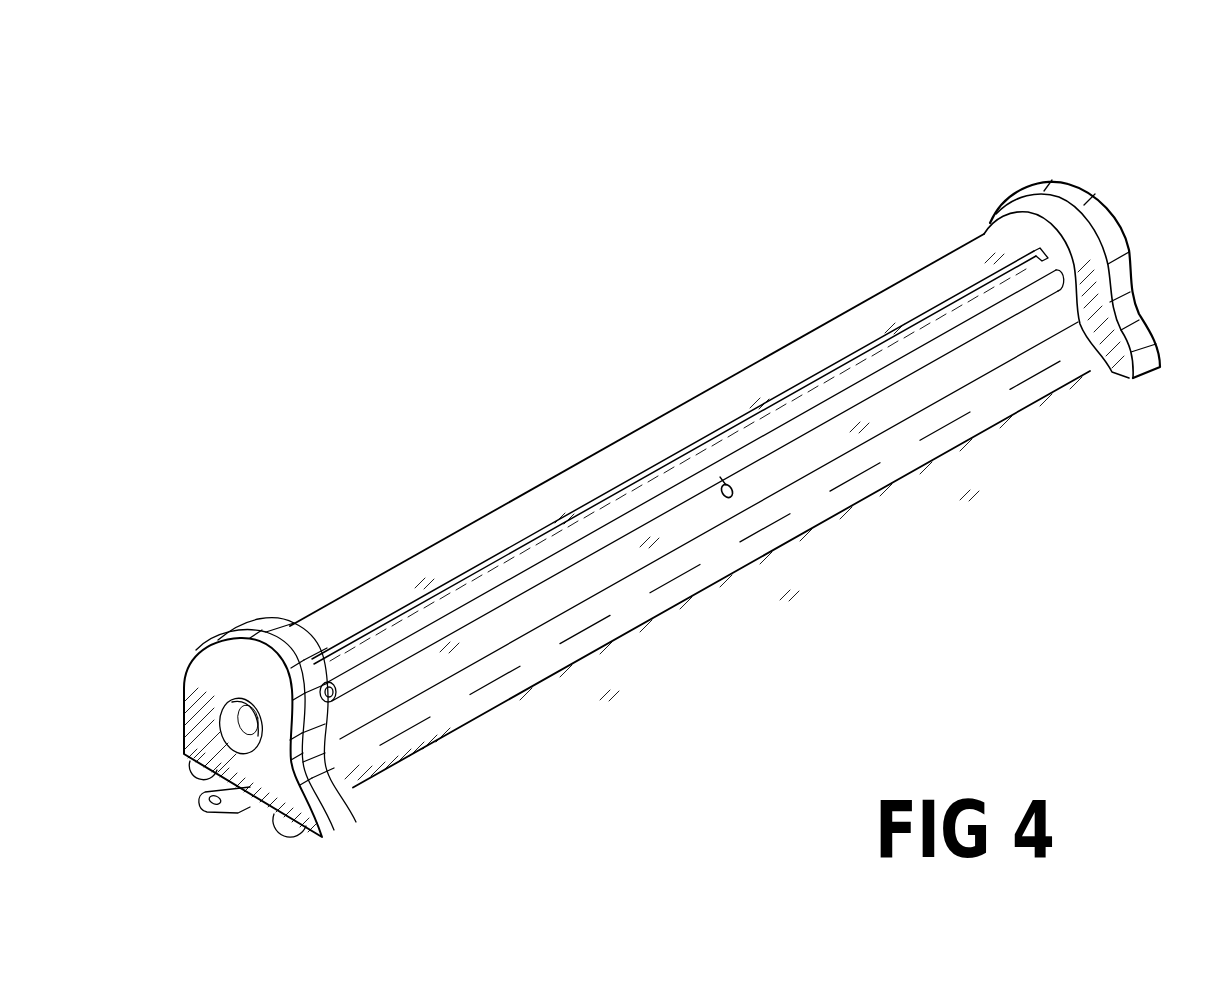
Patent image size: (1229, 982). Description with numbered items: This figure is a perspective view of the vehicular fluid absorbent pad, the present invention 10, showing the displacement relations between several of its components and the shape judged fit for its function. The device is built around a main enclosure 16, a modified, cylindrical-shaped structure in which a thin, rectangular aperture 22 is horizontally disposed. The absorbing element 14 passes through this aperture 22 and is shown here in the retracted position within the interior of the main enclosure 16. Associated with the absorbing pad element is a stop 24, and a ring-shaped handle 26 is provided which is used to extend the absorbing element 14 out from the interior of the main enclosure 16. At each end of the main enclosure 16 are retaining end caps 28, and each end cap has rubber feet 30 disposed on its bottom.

The present invention 10 is at (888, 265).
The absorbing element 14 is at (512, 568).
The main enclosure 16 is at (836, 323).
The aperture 22 is at (488, 566).
The stop 24 is at (597, 546).
The ring-shaped handle 26 is at (733, 497).
The retaining end caps 28 is at (270, 660).
The rubber feet 30 is at (288, 836).